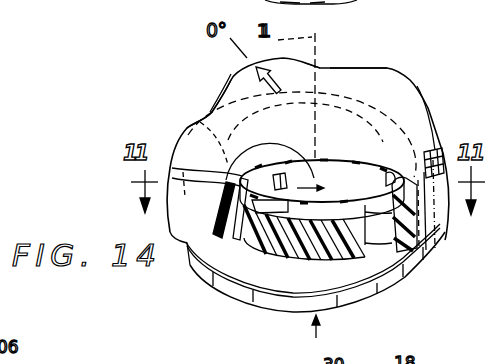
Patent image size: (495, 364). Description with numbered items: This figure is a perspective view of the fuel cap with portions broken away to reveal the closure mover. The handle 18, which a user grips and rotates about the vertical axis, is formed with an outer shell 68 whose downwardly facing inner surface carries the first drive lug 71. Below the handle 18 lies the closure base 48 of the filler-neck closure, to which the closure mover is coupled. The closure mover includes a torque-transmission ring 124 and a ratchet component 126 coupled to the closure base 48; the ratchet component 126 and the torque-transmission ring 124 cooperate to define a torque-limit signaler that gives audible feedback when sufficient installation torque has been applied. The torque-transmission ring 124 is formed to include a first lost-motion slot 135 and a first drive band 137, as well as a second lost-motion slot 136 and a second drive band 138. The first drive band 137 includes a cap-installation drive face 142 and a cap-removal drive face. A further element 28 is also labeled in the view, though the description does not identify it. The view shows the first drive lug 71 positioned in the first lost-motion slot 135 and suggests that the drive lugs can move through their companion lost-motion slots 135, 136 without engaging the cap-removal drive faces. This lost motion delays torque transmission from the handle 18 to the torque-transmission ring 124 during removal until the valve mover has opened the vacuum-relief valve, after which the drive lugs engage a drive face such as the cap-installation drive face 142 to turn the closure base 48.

The handle 18 is at (380, 62).
The hub 28 is at (262, 112).
The closure base 48 is at (410, 289).
The outer shell 68 is at (392, 83).
The first drive lug 71 is at (308, 192).
The torque-transmission ring 124 is at (367, 180).
The ratchet component 126 is at (352, 166).
The first lost-motion slot 135 is at (343, 182).
The second lost-motion slot 136 is at (344, 70).
The first drive band 137 is at (427, 127).
The second drive band 138 is at (197, 120).
The cap-installation drive face 142 is at (328, 213).